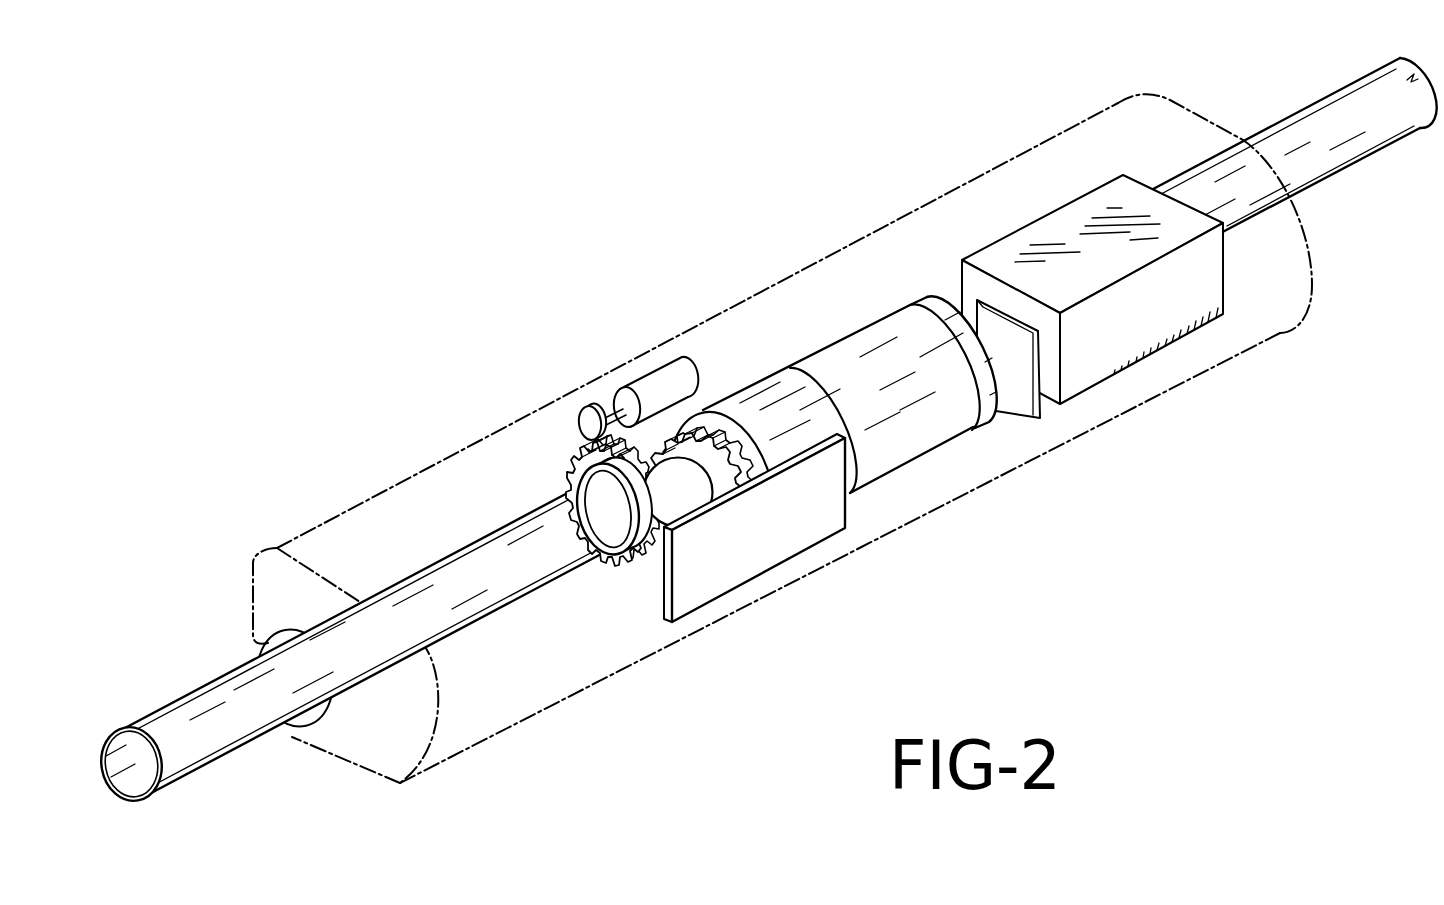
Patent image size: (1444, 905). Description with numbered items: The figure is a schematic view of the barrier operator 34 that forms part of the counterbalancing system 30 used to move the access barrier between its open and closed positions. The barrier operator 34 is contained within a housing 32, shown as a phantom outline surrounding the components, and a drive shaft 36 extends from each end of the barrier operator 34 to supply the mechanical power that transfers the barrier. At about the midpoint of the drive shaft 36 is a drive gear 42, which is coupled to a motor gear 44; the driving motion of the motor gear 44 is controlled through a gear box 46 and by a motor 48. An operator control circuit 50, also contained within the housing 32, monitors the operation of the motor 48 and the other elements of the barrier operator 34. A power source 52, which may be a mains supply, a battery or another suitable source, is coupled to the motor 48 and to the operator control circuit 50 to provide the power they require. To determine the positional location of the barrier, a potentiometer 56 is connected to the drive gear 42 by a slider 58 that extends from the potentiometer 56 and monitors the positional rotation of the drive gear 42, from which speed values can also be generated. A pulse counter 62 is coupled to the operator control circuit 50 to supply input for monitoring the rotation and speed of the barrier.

The counterbalancing system 30 is at (766, 447).
The housing 32 is at (766, 447).
The barrier operator 34 is at (810, 395).
The drive shaft 36 is at (215, 728).
The drive gear 42 is at (660, 412).
The motor gear 44 is at (703, 437).
The gear box 46 is at (768, 400).
The motor 48 is at (913, 447).
The operator control circuit 50 is at (815, 528).
The power source 52 is at (1198, 317).
The potentiometer 56 is at (641, 378).
The slider 58 is at (587, 430).
The pulse counter 62 is at (1017, 393).